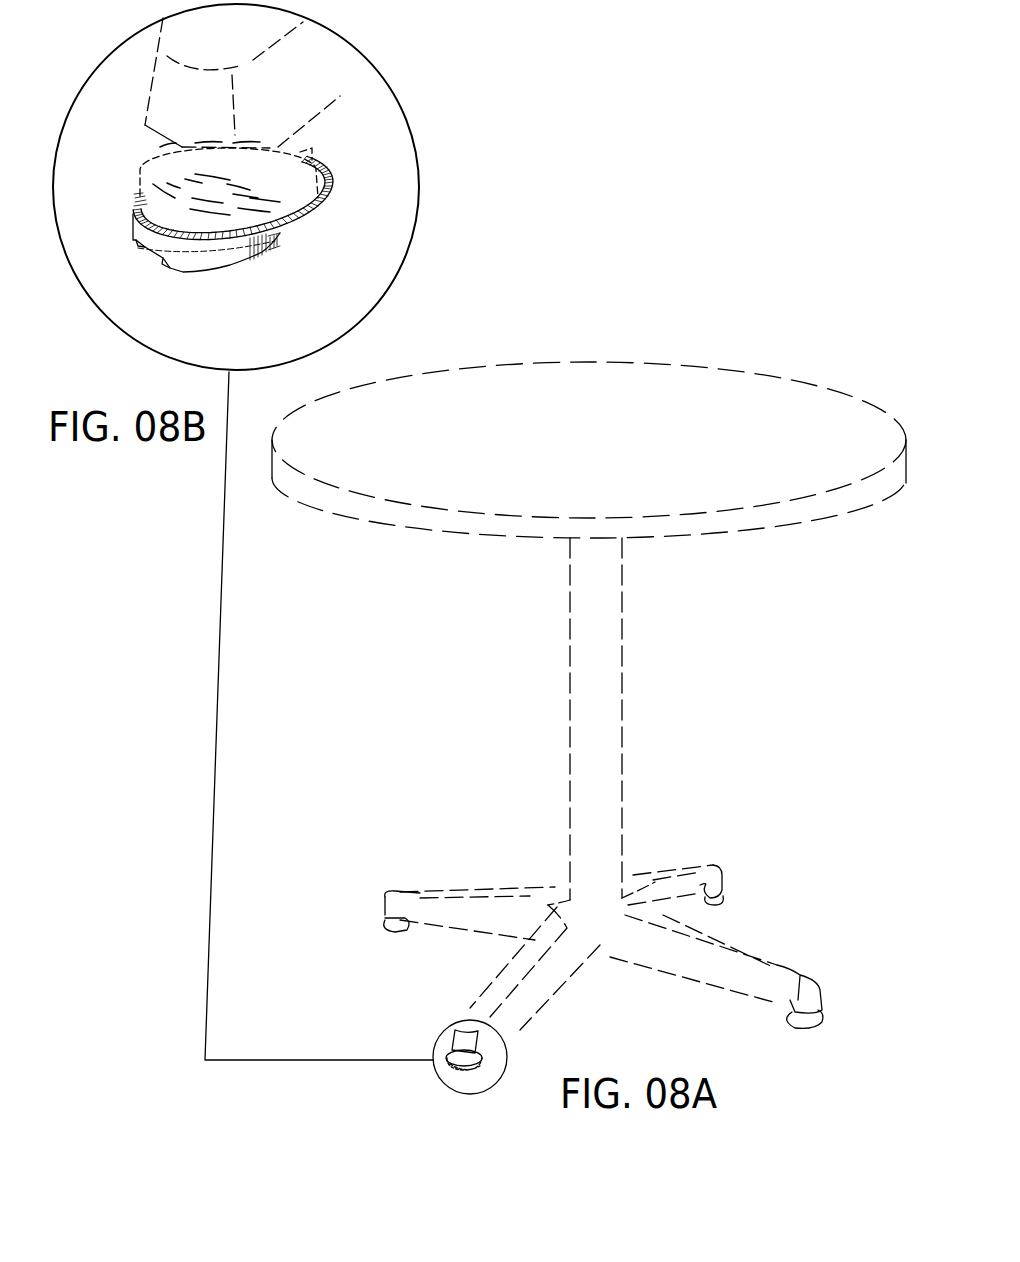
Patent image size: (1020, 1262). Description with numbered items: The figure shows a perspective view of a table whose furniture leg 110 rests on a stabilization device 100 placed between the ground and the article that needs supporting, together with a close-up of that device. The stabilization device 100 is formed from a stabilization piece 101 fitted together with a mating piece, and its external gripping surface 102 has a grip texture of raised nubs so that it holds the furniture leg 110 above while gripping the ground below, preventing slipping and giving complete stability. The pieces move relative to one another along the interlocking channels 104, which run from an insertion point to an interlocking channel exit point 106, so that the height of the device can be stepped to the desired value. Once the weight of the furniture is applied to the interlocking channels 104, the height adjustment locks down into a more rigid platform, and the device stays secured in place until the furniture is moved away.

The stabilization device 100 is at (293, 245).
The stabilization piece 101 is at (338, 195).
The external gripping surface 102 is at (258, 230).
The interlocking channel(s) 104 is at (312, 148).
The interlocking channel(s) exit point 106 is at (172, 270).
The furniture leg 110 is at (337, 77).